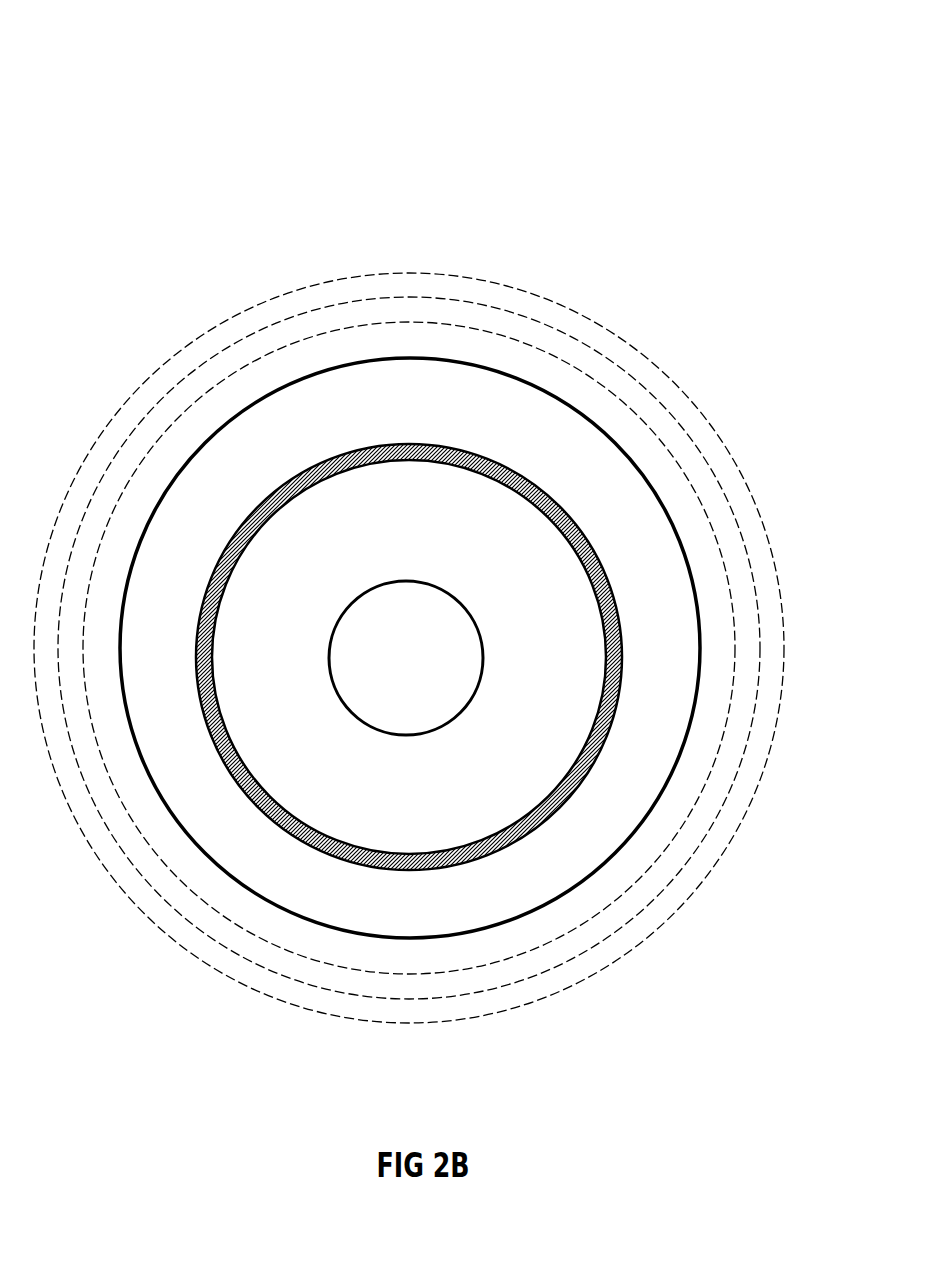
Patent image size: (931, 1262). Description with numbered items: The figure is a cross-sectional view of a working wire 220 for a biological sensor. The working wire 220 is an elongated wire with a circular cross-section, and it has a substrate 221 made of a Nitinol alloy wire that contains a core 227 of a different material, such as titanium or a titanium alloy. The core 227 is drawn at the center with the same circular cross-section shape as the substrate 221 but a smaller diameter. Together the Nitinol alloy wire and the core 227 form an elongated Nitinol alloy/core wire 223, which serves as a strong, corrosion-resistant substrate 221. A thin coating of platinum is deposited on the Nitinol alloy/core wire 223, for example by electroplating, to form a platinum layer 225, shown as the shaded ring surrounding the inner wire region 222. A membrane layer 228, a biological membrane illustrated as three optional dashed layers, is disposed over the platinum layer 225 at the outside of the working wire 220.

The working wire 220 is at (684, 111).
The substrate 221 is at (315, 362).
The cladding layer 222 is at (463, 447).
The Nitinol alloy/core wire 223 is at (475, 573).
The platinum layer 225 is at (657, 555).
The core 227 is at (408, 582).
The membrane layer 228 is at (190, 332).